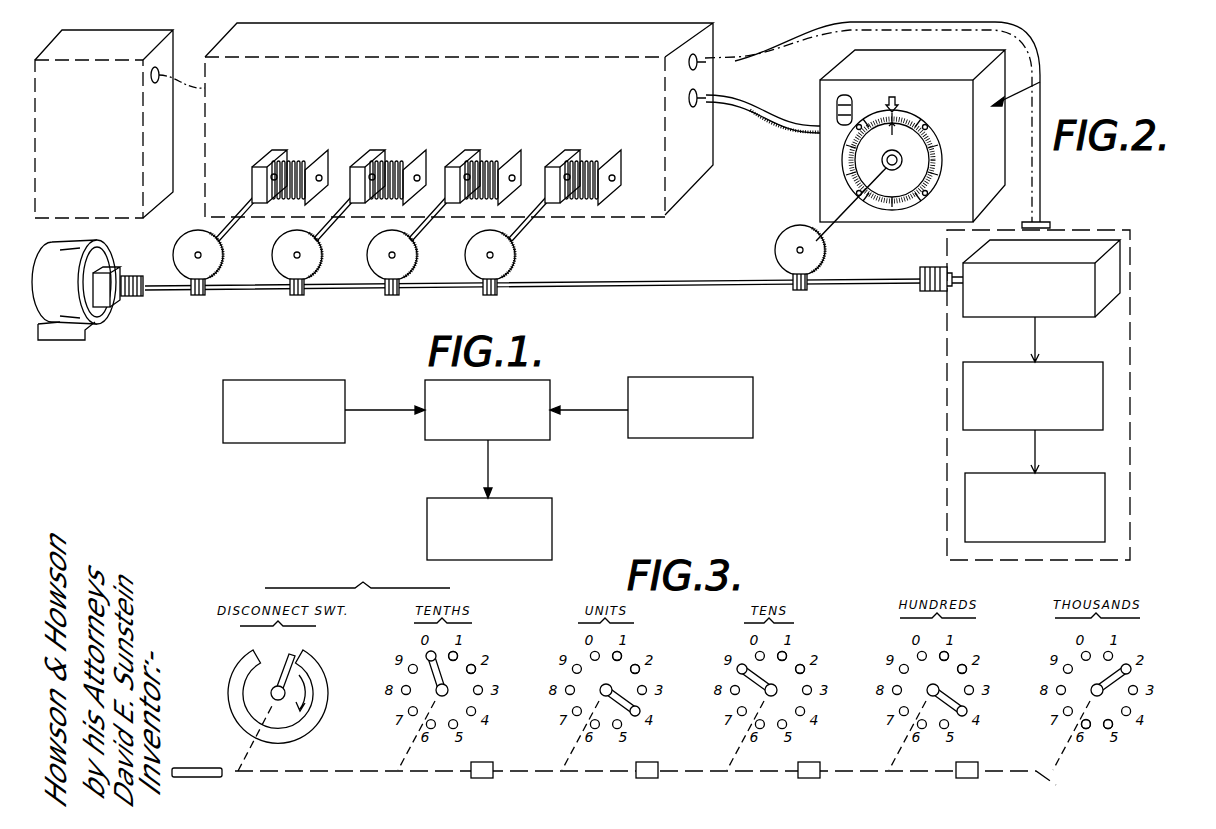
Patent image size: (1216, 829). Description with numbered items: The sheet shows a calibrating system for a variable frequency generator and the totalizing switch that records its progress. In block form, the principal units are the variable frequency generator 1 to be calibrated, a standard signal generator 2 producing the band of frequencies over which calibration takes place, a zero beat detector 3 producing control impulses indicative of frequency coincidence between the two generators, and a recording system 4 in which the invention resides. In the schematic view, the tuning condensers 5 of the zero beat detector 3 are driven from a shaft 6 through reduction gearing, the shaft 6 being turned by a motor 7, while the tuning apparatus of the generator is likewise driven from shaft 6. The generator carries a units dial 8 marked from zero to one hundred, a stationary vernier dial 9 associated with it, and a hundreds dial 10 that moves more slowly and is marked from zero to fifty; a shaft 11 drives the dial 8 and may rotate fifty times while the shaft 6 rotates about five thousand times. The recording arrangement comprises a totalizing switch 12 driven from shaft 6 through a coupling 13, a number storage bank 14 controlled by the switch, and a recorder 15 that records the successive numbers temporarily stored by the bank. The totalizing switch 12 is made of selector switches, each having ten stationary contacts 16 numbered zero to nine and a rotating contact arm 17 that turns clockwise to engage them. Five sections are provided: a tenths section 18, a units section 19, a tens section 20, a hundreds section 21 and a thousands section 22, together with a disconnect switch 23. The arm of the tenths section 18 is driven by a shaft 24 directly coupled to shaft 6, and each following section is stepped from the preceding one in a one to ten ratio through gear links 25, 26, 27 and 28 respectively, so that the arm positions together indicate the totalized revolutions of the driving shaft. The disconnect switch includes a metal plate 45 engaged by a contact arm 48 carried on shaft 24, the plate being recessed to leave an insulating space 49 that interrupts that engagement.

In FIG. 2, the variable frequency generator 1 is at (852, 66).
In FIG. 1, the variable frequency generator 1 is at (672, 350).
In FIG. 2, the standard signal generator 2 is at (152, 197).
In FIG. 1, the standard signal generator 2 is at (290, 384).
In FIG. 2, the zero beat detector 3 is at (710, 35).
In FIG. 1, the zero beat detector 3 is at (533, 435).
In FIG. 1, the recording system 4 is at (453, 505).
In FIG. 2, the tuning condensers 5 is at (581, 160).
In FIG. 2, the shaft 6 is at (641, 282).
In FIG. 2, the motor 7 is at (100, 308).
In FIG. 2, the units dial 8 is at (908, 124).
In FIG. 2, the stationary vernier dial 9 is at (884, 117).
In FIG. 2, the hundreds dial 10 is at (836, 106).
In FIG. 2, the shaft 11 is at (848, 201).
In FIG. 2, the totalizing switch 12 is at (1045, 250).
In FIG. 3, the totalizing switch 12 is at (357, 576).
In FIG. 2, the coupling 13 is at (931, 268).
In FIG. 2, the number storage bank 14 is at (1088, 366).
In FIG. 2, the recorder 15 is at (1090, 480).
In FIG. 3, the stationary contacts 16 is at (1108, 728).
In FIG. 3, the rotating contact arm 17 is at (1112, 668).
In FIG. 3, the tenths section 18 is at (457, 698).
In FIG. 3, the units section 19 is at (628, 700).
In FIG. 3, the tens section 20 is at (795, 699).
In FIG. 3, the hundreds section 21 is at (957, 699).
In FIG. 3, the thousands section 22 is at (1122, 694).
In FIG. 3, the disconnect switch 23 is at (299, 718).
In FIG. 2, the shaft 24 is at (960, 286).
In FIG. 3, the shaft 24 is at (1056, 785).
In FIG. 3, the gear link 25 is at (482, 778).
In FIG. 3, the gear link 26 is at (648, 778).
In FIG. 3, the gear link 27 is at (812, 778).
In FIG. 3, the gear link 28 is at (970, 778).
In FIG. 3, the metal plate 45 is at (237, 688).
In FIG. 3, the contact arm 48 is at (280, 685).
In FIG. 3, the insulating space 49 is at (277, 655).